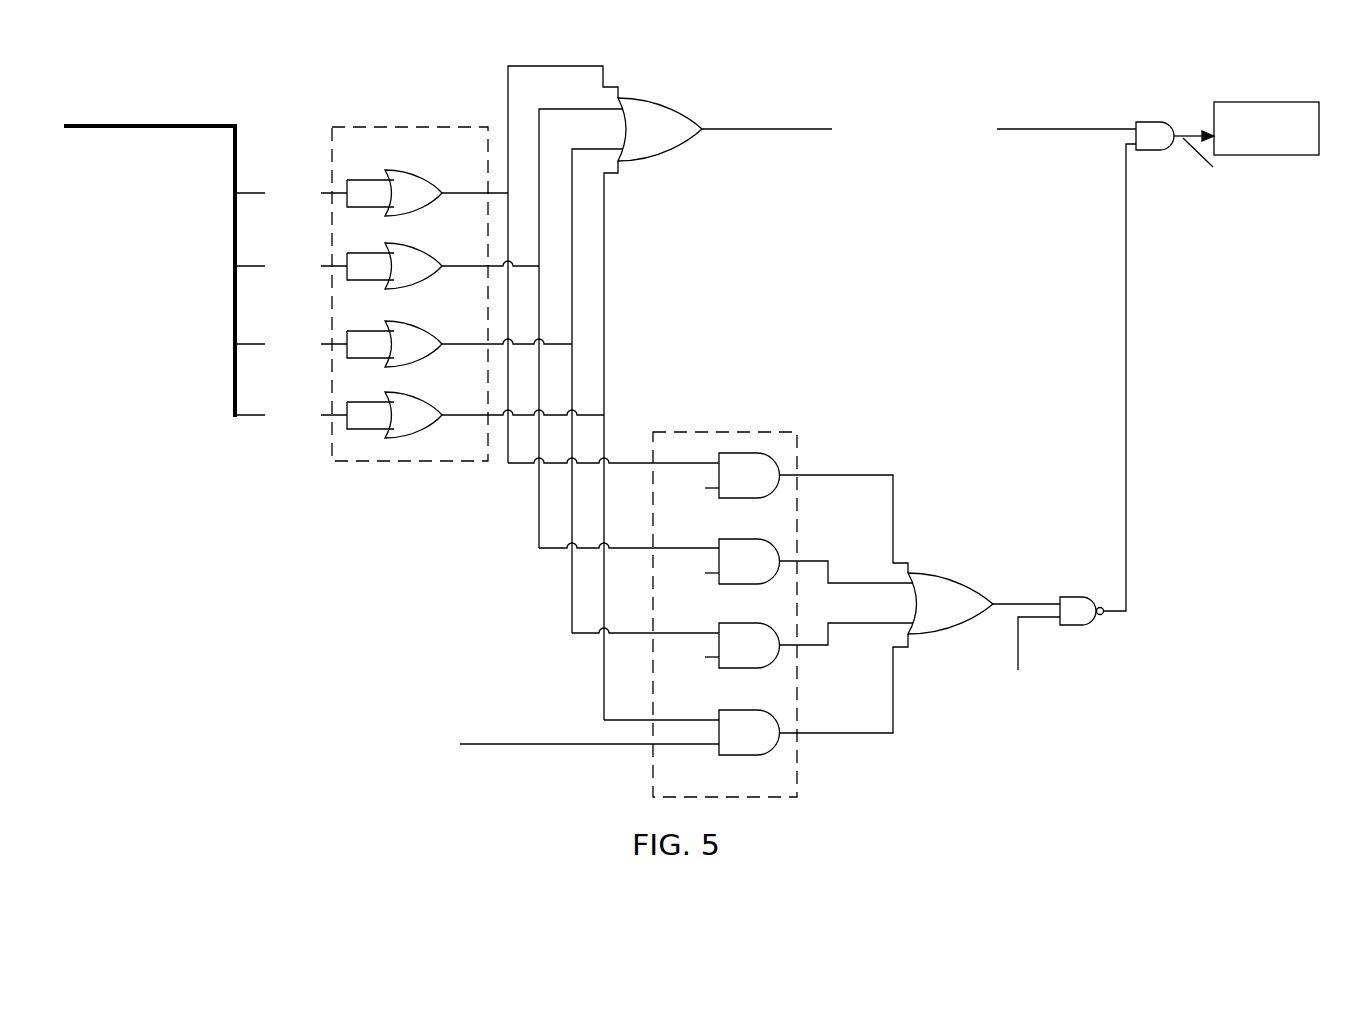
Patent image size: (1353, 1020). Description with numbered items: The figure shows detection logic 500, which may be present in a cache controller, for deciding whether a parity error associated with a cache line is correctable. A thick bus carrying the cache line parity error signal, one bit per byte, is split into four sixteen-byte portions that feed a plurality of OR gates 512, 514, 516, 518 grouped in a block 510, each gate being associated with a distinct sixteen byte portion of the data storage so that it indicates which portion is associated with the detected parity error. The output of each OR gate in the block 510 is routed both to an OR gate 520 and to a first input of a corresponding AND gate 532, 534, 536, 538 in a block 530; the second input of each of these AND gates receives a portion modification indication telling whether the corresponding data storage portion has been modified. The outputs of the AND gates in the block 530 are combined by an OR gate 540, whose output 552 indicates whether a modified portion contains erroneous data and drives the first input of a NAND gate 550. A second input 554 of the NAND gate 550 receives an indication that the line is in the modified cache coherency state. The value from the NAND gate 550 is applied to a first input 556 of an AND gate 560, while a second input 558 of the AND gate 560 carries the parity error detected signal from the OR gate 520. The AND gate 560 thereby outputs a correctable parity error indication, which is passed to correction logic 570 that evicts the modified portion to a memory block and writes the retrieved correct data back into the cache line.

The logic 500 is at (253, 687).
The block 510 is at (437, 127).
The OR gate 512 is at (423, 172).
The OR gate 514 is at (423, 245).
The OR gate 516 is at (423, 323).
The OR gate 518 is at (423, 394).
The OR gate 520 is at (673, 105).
The block 530 is at (732, 432).
The AND gate 532 is at (757, 498).
The AND gate 534 is at (757, 584).
The AND gate 536 is at (757, 668).
The AND gate 538 is at (757, 755).
The OR gate 540 is at (947, 576).
The NAND gate 550 is at (1070, 597).
The output 552 is at (1010, 604).
The second input 554 is at (1027, 618).
The first input 556 is at (1126, 443).
The second input 558 is at (1032, 127).
The AND gate 560 is at (1150, 120).
The correction logic 570 is at (1275, 102).